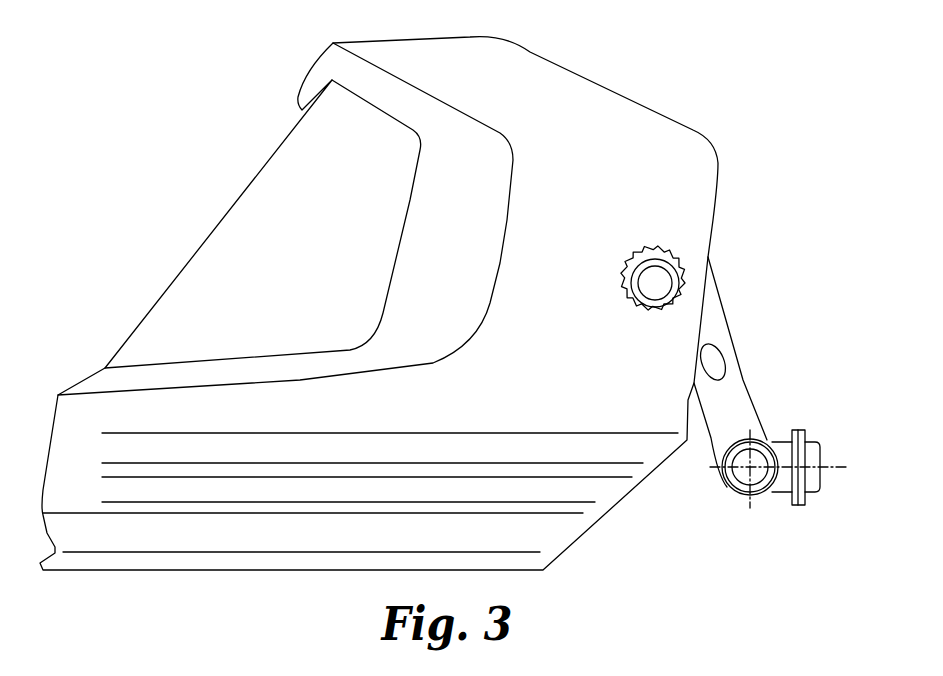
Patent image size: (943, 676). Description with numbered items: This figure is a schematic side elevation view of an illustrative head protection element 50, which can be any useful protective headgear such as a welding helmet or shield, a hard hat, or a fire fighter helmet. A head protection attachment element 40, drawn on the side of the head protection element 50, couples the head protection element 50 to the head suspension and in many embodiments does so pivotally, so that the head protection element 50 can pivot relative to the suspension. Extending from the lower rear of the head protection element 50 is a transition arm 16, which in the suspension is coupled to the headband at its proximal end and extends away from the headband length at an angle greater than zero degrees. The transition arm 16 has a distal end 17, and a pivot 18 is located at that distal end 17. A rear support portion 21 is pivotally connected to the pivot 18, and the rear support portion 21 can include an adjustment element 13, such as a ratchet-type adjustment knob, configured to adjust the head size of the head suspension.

The head protection element 50 is at (253, 184).
The head protection attachment element 40 is at (653, 275).
The transition arm 16 is at (738, 373).
The pivot 18 is at (735, 483).
The rear support portion 21 is at (783, 450).
The adjustment element 13 is at (815, 448).
The distal end 17 is at (762, 498).